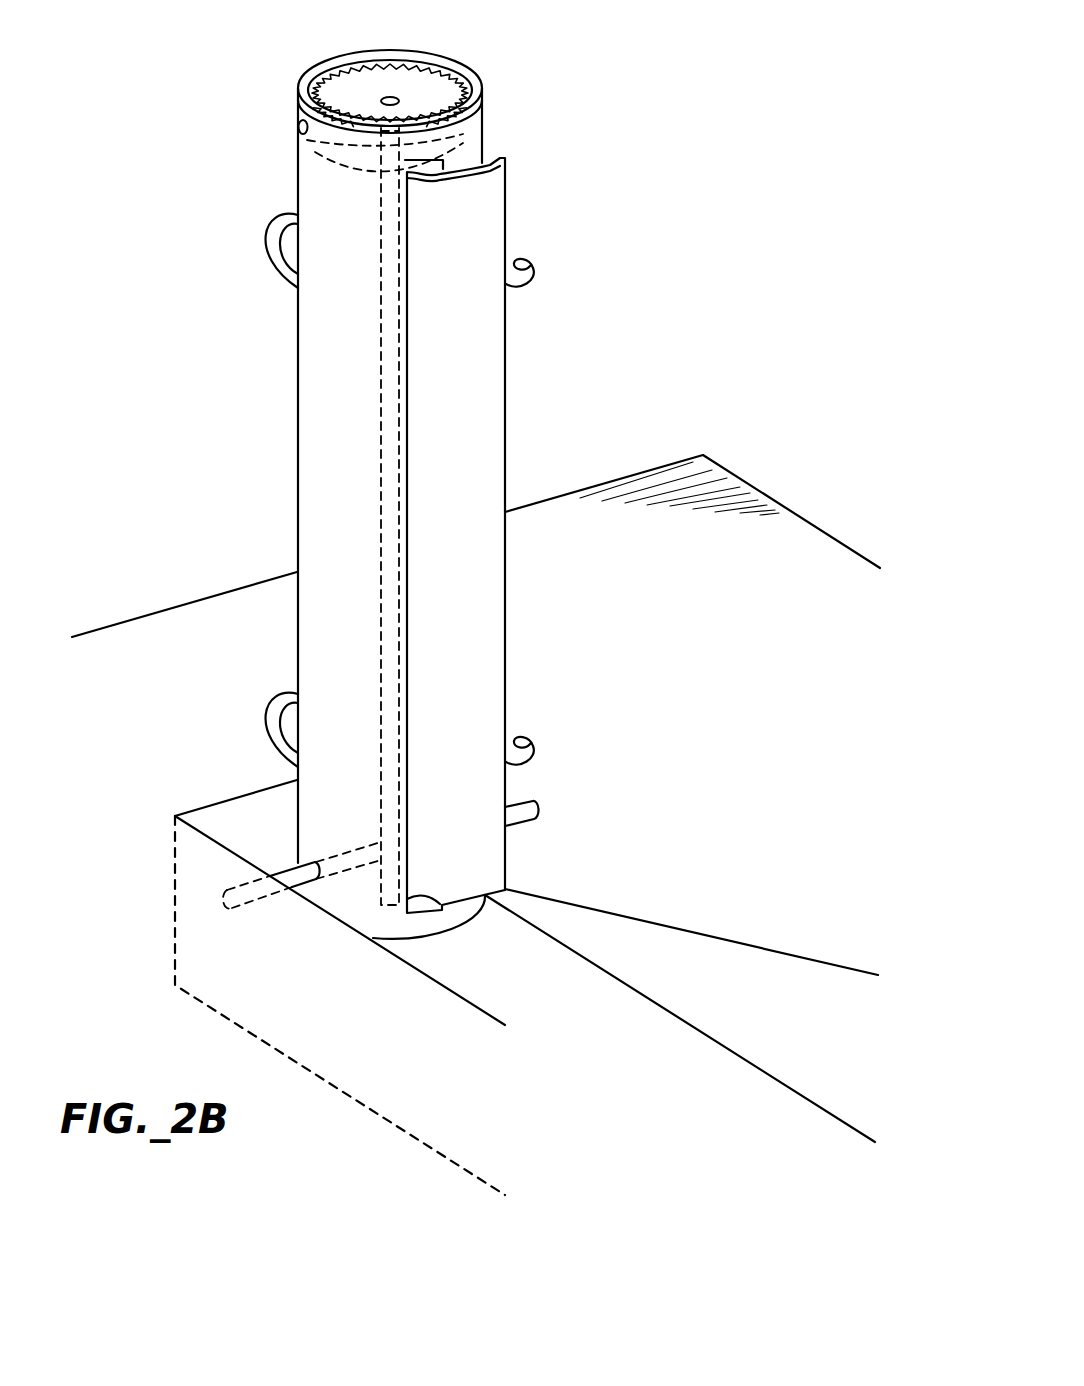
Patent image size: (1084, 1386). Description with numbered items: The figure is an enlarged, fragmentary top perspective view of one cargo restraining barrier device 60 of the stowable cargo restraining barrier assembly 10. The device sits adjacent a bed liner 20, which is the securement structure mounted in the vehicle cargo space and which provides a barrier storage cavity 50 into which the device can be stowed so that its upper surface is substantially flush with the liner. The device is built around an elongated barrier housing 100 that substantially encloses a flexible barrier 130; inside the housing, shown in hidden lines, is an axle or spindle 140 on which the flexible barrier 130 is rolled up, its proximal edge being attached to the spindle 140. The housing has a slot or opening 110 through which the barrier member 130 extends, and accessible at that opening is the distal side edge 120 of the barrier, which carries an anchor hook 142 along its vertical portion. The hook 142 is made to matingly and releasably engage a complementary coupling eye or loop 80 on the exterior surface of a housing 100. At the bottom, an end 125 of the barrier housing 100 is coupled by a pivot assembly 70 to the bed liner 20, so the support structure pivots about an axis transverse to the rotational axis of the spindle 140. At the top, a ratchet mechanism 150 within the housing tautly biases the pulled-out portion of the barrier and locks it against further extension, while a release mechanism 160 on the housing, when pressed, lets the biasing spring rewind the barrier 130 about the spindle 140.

The cargo restraining barrier assembly 10 is at (686, 298).
The bed liner 20 is at (787, 543).
The barrier storage cavity 50 is at (617, 850).
The cargo restraining barrier device 60 is at (311, 494).
The pivot assembly 70 is at (224, 875).
The coupling loop 80 is at (268, 220).
The barrier housing 100 is at (297, 408).
The slot 110 is at (447, 161).
The distal side edge 120 is at (510, 338).
The end of barrier housing 125 is at (392, 917).
The flexible barrier 130 is at (511, 535).
The spindle 140 is at (378, 214).
The anchor hook 142 is at (533, 258).
The ratchet mechanism 150 is at (355, 90).
The release mechanism 160 is at (300, 121).